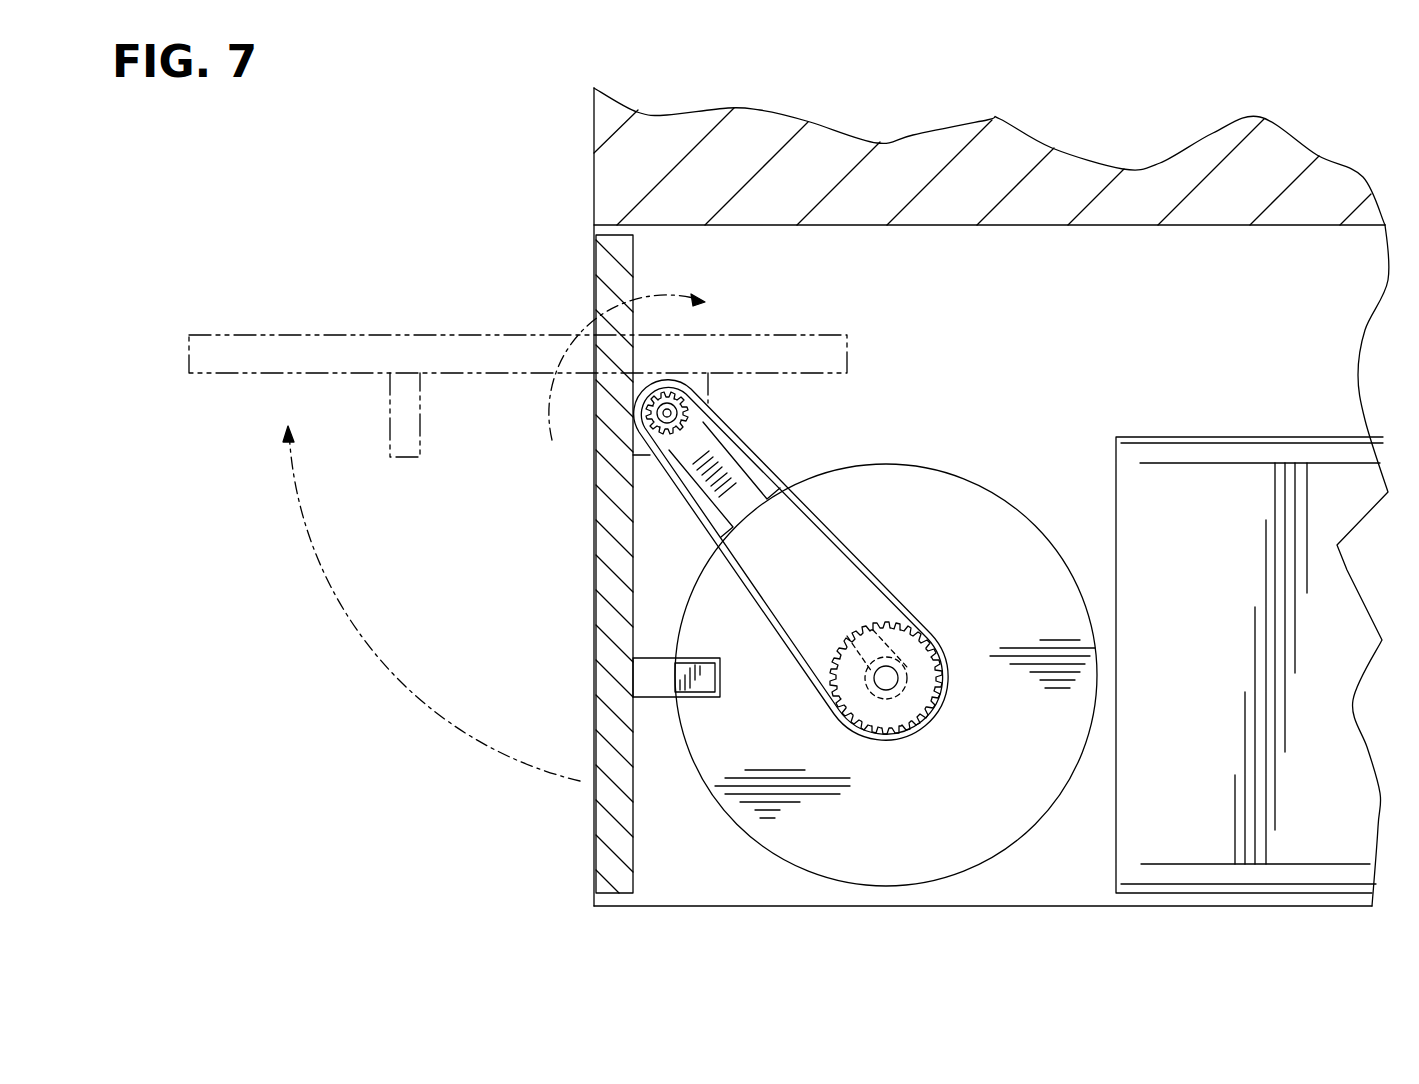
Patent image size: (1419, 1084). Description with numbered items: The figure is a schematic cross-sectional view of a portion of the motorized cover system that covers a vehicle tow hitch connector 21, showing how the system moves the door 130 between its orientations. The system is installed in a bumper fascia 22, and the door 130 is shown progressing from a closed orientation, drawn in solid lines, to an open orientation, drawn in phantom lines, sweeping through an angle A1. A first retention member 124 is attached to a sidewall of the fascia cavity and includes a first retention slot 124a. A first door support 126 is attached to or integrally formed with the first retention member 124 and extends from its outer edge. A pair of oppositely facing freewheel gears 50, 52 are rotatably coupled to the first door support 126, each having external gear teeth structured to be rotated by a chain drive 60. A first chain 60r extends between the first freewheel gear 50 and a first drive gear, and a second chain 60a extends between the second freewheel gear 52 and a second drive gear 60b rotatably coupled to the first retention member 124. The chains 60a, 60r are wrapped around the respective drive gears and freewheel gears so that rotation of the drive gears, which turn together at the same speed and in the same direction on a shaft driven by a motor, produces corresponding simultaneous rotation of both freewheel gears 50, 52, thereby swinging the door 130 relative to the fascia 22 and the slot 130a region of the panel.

The bumper fascia 22 is at (592, 200).
The door 130 is at (608, 893).
The panel slot 130a is at (653, 676).
The first retention slot 124a is at (720, 676).
The first retention member 124 is at (963, 497).
The chain drive 60 is at (846, 522).
The second chain 60a is at (846, 522).
The first chain 60r is at (850, 545).
The first door support 126 is at (780, 488).
The first freewheel gear 50 is at (744, 410).
The second freewheel gear 52 is at (662, 410).
The second drive gear 60b is at (905, 705).
The vehicle tow hitch connector 21 is at (1183, 800).
The pivot angle A1 is at (372, 662).